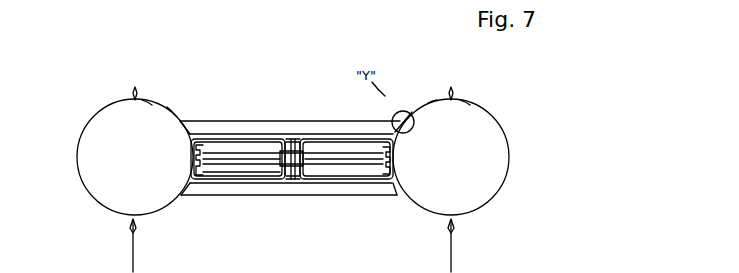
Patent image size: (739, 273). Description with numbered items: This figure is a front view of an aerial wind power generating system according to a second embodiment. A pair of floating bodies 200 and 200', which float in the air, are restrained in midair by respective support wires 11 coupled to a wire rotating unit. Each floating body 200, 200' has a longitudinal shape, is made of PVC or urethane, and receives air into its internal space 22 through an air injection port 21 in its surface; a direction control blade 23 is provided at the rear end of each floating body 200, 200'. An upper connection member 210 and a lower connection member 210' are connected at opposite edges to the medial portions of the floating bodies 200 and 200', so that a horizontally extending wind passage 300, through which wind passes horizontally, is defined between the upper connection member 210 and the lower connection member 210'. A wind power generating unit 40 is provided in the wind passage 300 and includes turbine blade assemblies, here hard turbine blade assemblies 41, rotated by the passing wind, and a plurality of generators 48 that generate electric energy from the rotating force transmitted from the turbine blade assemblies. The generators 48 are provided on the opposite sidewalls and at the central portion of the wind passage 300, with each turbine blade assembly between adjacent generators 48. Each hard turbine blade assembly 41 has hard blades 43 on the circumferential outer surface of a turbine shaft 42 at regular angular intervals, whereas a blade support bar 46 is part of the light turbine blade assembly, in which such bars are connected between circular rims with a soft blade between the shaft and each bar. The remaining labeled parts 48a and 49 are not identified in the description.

The support wire 11 is at (136, 230).
The air injection port 21 is at (96, 208).
The internal space 22 is at (149, 102).
The direction control blade 23 is at (139, 91).
The wind power generating unit 40 is at (237, 179).
The hard turbine blade assembly 41 is at (248, 87).
The turbine shaft 42 is at (247, 133).
The hard blade 43 is at (223, 133).
The blade support bar 46 is at (281, 172).
The generator 48 is at (193, 191).
The bracket 48a is at (194, 135).
The partition 49 is at (303, 133).
The floating body 200 is at (191, 93).
The floating body 200' is at (412, 79).
The upper connection member 210 is at (290, 100).
The lower connection member 210' is at (289, 210).
The wind passage 300 is at (258, 140).